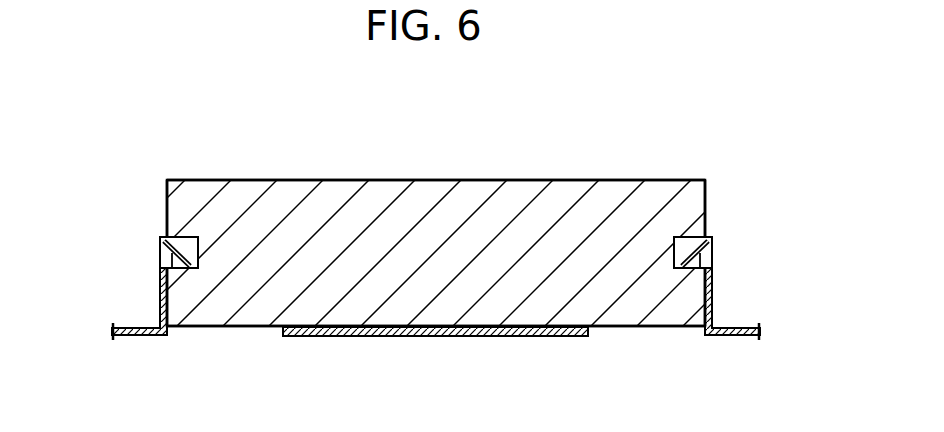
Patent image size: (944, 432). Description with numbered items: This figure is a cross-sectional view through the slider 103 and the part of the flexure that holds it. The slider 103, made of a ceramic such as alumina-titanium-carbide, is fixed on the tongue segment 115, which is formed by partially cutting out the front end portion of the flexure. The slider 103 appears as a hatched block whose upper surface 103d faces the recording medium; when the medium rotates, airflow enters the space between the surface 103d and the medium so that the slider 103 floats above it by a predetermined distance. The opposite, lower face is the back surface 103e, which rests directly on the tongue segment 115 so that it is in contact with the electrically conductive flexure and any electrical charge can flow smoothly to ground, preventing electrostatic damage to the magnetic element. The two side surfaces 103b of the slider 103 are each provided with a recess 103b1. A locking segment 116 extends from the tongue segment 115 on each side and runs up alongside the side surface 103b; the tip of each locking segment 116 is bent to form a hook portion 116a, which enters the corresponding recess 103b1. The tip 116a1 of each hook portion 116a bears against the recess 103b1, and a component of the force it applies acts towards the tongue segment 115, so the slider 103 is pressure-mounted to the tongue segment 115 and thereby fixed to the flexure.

The slider 103 is at (430, 178).
The surface facing the recording medium 103d is at (567, 180).
The back surface 103e is at (623, 327).
The side surface 103b is at (167, 208).
The recess 103b1 is at (183, 247).
The locking segment 116 is at (160, 293).
The hook portion 116a is at (160, 237).
The tip of hook portion 116a1 is at (190, 268).
The tongue segment 115 is at (488, 336).